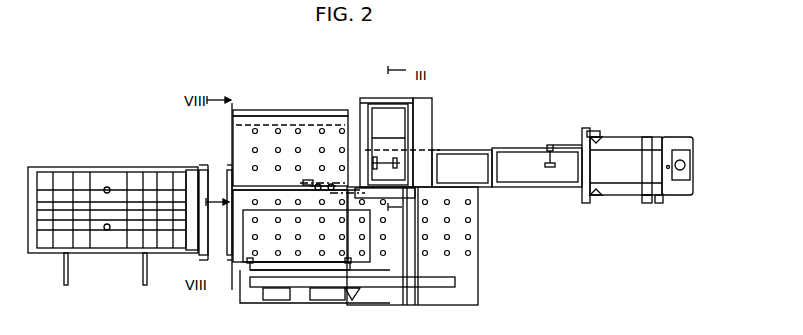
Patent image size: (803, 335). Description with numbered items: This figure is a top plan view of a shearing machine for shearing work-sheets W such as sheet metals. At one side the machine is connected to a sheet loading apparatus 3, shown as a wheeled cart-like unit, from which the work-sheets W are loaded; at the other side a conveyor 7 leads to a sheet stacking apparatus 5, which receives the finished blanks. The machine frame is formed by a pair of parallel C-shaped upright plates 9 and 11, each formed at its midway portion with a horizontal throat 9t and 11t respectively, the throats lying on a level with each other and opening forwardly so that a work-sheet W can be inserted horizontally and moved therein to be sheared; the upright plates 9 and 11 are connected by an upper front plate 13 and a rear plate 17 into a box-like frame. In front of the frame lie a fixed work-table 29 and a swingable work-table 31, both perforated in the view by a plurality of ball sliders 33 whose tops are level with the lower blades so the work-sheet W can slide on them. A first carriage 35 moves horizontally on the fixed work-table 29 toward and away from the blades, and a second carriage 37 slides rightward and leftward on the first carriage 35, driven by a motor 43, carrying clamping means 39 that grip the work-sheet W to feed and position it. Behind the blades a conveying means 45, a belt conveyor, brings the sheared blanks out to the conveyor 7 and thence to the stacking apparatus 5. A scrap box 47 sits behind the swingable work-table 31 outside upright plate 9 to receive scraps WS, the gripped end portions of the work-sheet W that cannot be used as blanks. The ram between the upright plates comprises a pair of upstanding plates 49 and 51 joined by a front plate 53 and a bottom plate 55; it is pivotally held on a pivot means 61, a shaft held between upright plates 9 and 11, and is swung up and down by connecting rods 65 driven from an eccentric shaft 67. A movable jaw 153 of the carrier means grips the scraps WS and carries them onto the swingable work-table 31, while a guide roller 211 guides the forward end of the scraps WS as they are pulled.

The sheet loading apparatus 3 is at (113, 193).
The sheet stacking apparatus 5 is at (637, 149).
The conveyor 7 is at (537, 141).
The upright plate 9 is at (363, 98).
The throat 9t is at (345, 98).
The upright plate 11 is at (400, 108).
The throat 11t is at (415, 150).
The upper front plate 13 is at (415, 208).
The rear plate 17 is at (375, 104).
The fixed work-table 29 is at (243, 195).
The swingable work-table 31 is at (240, 136).
The ball sliders 33 is at (232, 258).
The first carriage 35 is at (346, 292).
The second carriage 37 is at (306, 287).
The clamping means 39 is at (248, 263).
The motor 43 is at (271, 300).
The conveying means 45 is at (488, 180).
The scrap box 47 is at (250, 110).
The upstanding plate 49 is at (356, 100).
The upstanding plate 51 is at (428, 118).
The front plate 53 is at (388, 144).
The bottom plate 55 is at (410, 114).
The pivot means 61 is at (405, 98).
The connecting rods 65 is at (462, 168).
The eccentric shaft 67 is at (400, 163).
The upper movable jaw 153 is at (300, 180).
The guide roller 211 is at (331, 182).
The work-sheet W is at (370, 210).
The scrap WS is at (306, 180).